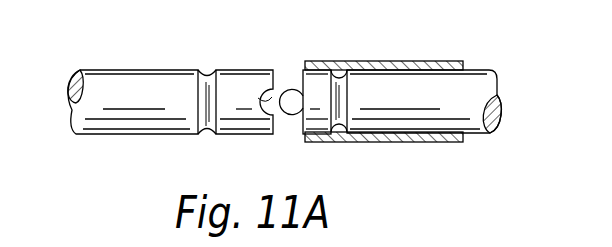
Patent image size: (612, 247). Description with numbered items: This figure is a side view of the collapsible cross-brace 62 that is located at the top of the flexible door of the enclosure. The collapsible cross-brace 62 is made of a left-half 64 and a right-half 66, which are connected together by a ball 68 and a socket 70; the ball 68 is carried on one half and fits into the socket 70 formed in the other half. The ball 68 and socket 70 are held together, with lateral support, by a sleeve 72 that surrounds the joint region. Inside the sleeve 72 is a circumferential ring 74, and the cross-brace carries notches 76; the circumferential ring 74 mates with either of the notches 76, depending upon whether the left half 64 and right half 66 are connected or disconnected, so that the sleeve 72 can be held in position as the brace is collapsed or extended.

The collapsible cross-brace 62 is at (110, 152).
The left-half 64 is at (133, 68).
The right-half 66 is at (478, 72).
The ball 68 is at (292, 118).
The socket 70 is at (268, 100).
The sleeve 72 is at (400, 62).
The circumferential ring 74 is at (348, 76).
The notches 76 is at (208, 68).